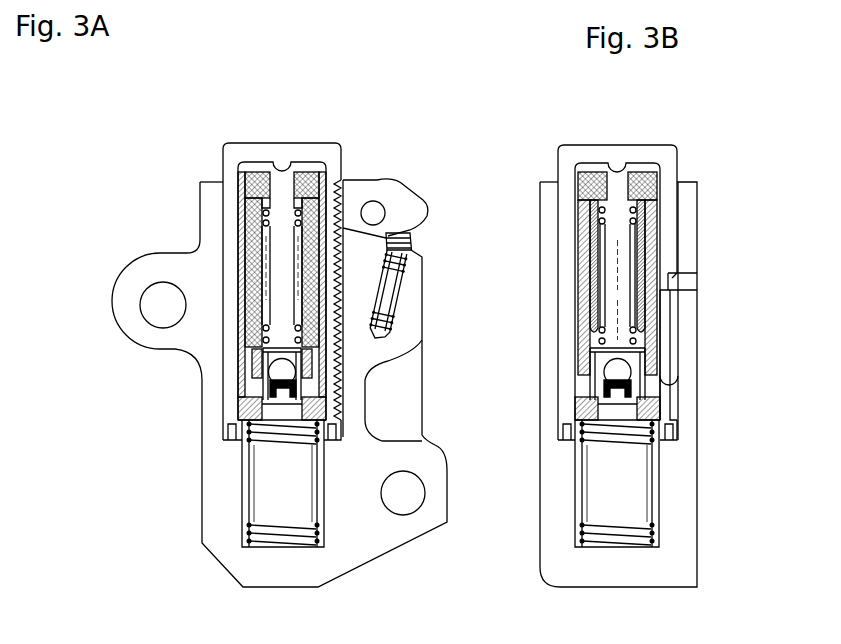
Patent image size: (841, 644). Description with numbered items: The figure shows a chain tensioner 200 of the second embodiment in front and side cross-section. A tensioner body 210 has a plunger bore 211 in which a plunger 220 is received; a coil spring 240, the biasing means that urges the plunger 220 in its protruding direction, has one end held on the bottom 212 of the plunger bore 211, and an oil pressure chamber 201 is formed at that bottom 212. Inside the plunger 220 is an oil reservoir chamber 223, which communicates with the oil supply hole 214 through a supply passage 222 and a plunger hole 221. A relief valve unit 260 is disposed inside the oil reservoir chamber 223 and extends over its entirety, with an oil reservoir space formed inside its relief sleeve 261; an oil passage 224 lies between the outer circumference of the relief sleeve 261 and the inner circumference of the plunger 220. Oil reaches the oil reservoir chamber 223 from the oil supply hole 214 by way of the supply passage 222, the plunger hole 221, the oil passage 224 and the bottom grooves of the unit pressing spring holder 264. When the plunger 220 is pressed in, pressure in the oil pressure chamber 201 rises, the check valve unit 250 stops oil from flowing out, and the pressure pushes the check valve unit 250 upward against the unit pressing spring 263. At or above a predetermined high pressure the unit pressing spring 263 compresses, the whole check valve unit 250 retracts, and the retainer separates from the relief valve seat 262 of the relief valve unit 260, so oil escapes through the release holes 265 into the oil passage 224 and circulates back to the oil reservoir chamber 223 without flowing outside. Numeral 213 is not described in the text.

In FIG. 3A, the chain tensioner 200 is at (96, 125).
In FIG. 3A, the oil pressure chamber 201 is at (276, 467).
In FIG. 3B, the oil pressure chamber 201 is at (624, 467).
In FIG. 3A, the tensioner body 210 is at (205, 248).
In FIG. 3B, the tensioner body 210 is at (690, 223).
In FIG. 3A, the plunger bore 211 is at (219, 180).
In FIG. 3B, the plunger bore 211 is at (556, 180).
In FIG. 3A, the bottom 212 is at (268, 535).
In FIG. 3B, the bottom 212 is at (605, 530).
In FIG. 3B, the protrusion 213 is at (668, 381).
In FIG. 3B, the oil supply hole 214 is at (702, 283).
In FIG. 3A, the plunger 220 is at (286, 143).
In FIG. 3B, the plunger 220 is at (638, 144).
In FIG. 3B, the plunger hole 221 is at (670, 291).
In FIG. 3B, the supply passage 222 is at (674, 345).
In FIG. 3A, the oil reservoir chamber 223 is at (284, 293).
In FIG. 3B, the oil reservoir chamber 223 is at (616, 293).
In FIG. 3A, the oil passage 224 is at (241, 241).
In FIG. 3B, the oil passage 224 is at (576, 246).
In FIG. 3A, the coil spring 240 is at (246, 527).
In FIG. 3B, the coil spring 240 is at (658, 527).
In FIG. 3A, the check valve unit 250 is at (256, 366).
In FIG. 3B, the check valve unit 250 is at (586, 389).
In FIG. 3B, the relief valve unit 260 is at (575, 329).
In FIG. 3A, the relief sleeve 261 is at (246, 283).
In FIG. 3A, the relief valve seat 262 is at (243, 408).
In FIG. 3A, the unit pressing spring 263 is at (243, 329).
In FIG. 3A, the unit pressing spring holder 264 is at (304, 172).
In FIG. 3A, the release holes 265 is at (251, 383).